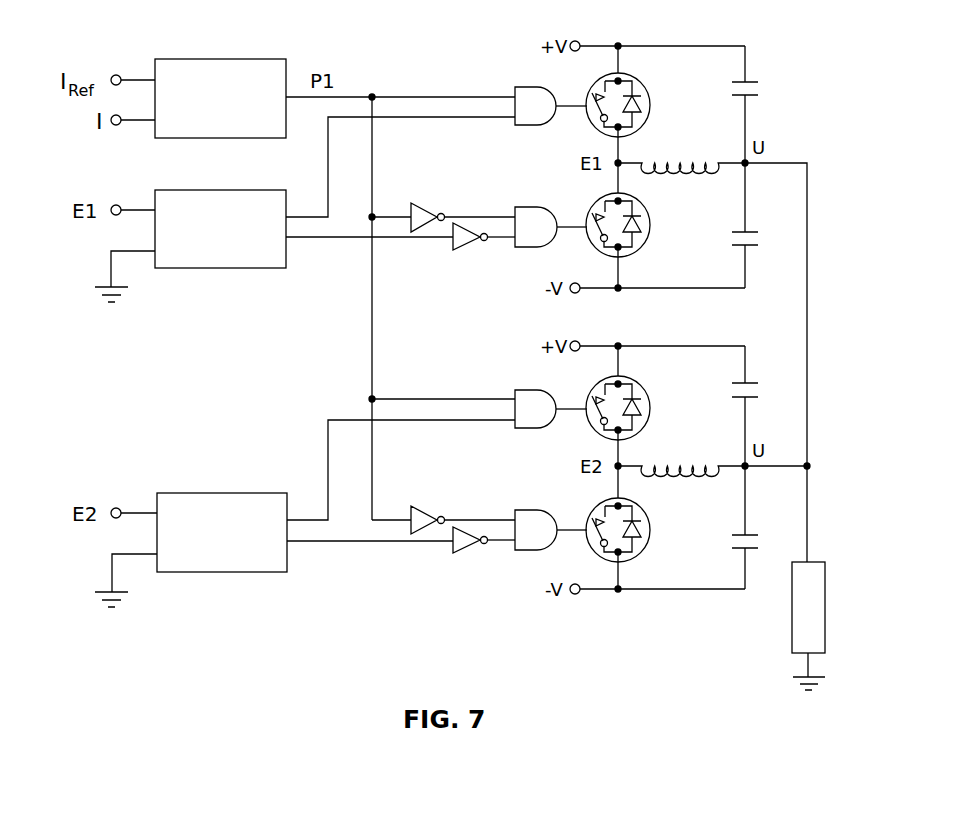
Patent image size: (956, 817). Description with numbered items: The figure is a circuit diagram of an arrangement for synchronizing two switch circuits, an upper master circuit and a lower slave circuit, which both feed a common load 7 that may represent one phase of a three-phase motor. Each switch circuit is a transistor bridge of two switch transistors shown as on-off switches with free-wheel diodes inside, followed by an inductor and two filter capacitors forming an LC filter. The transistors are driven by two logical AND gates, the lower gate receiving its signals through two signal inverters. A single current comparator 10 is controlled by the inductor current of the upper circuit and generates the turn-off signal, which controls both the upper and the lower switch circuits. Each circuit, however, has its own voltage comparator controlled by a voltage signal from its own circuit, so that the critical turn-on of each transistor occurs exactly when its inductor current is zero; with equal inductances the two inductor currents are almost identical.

The load 7 is at (815, 562).
The current comparator 10 is at (203, 59).